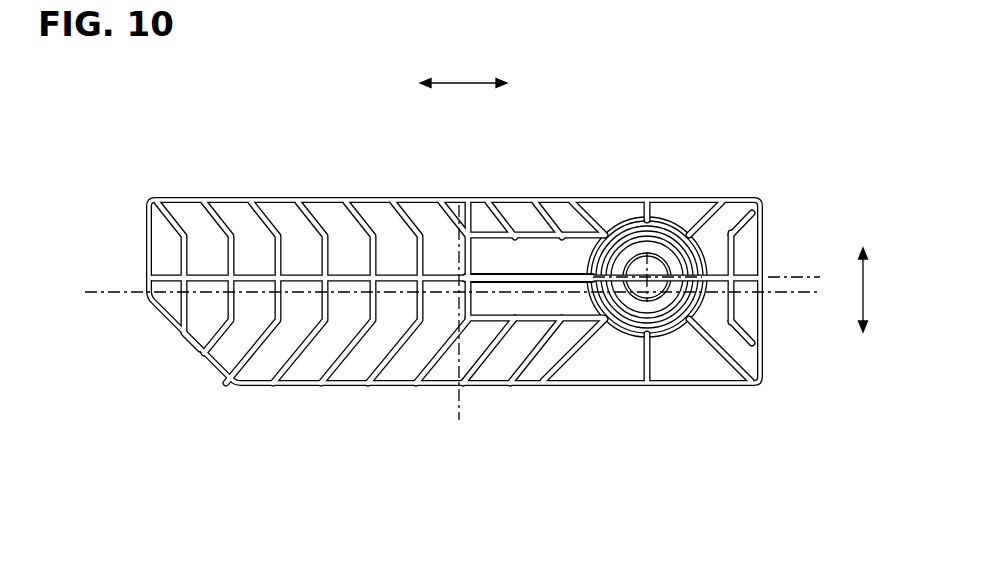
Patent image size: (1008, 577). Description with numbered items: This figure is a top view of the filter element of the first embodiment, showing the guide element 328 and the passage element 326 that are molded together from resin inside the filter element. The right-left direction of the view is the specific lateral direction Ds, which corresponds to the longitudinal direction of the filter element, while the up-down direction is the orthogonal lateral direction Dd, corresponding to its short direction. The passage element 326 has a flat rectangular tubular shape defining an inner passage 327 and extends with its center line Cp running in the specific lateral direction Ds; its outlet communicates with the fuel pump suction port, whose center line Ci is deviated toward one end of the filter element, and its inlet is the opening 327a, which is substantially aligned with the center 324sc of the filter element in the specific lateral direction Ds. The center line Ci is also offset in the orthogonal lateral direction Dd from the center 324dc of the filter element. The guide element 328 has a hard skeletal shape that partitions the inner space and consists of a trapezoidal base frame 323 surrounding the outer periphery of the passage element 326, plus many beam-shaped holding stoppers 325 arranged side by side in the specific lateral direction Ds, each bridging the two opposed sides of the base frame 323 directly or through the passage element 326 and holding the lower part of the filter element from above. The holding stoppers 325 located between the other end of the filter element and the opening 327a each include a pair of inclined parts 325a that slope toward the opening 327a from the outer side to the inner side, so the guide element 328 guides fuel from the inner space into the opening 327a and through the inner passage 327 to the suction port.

The base frame 323 is at (469, 390).
The center in the orthogonal lateral direction of the filter element 324dc is at (120, 292).
The center in the specific lateral direction of the filter element 324sc is at (518, 268).
The holding stopper 325 is at (276, 384).
The inclined part 325a is at (182, 202).
The passage element 326 is at (576, 202).
The inner passage 327 is at (466, 203).
The opening 327a is at (458, 217).
The guide element 328 is at (713, 478).
The center line of the suction port Ci is at (652, 265).
The center line of the passage element Cp is at (793, 272).
The orthogonal lateral direction Dd is at (878, 290).
The specific lateral direction Ds is at (463, 238).